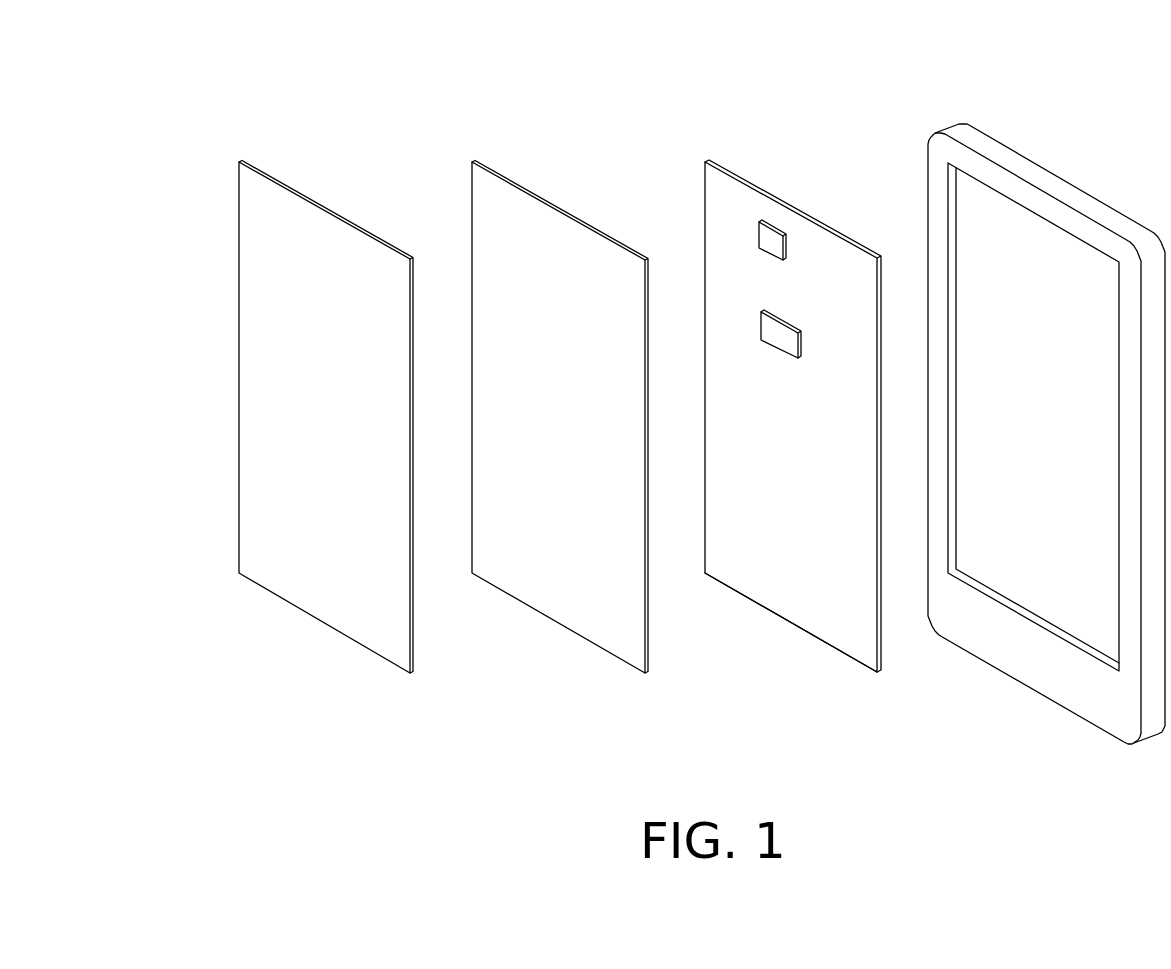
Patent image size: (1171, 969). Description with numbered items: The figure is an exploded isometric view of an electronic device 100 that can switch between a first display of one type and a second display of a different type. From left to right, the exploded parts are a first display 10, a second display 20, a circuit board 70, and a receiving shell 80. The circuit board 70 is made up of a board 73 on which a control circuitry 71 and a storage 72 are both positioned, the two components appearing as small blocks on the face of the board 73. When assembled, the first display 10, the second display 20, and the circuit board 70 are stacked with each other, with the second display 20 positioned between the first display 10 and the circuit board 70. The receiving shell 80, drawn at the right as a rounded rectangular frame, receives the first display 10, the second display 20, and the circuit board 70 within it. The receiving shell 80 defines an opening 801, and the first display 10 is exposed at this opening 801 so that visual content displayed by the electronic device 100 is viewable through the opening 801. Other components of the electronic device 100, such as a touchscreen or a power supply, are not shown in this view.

The electronic device 100 is at (296, 70).
The first display 10 is at (258, 226).
The second display 20 is at (490, 208).
The circuit board 70 is at (775, 198).
The control circuitry 71 is at (770, 240).
The storage 72 is at (770, 332).
The board 73 is at (775, 588).
The receiving shell 80 is at (1063, 185).
The opening 801 is at (952, 185).